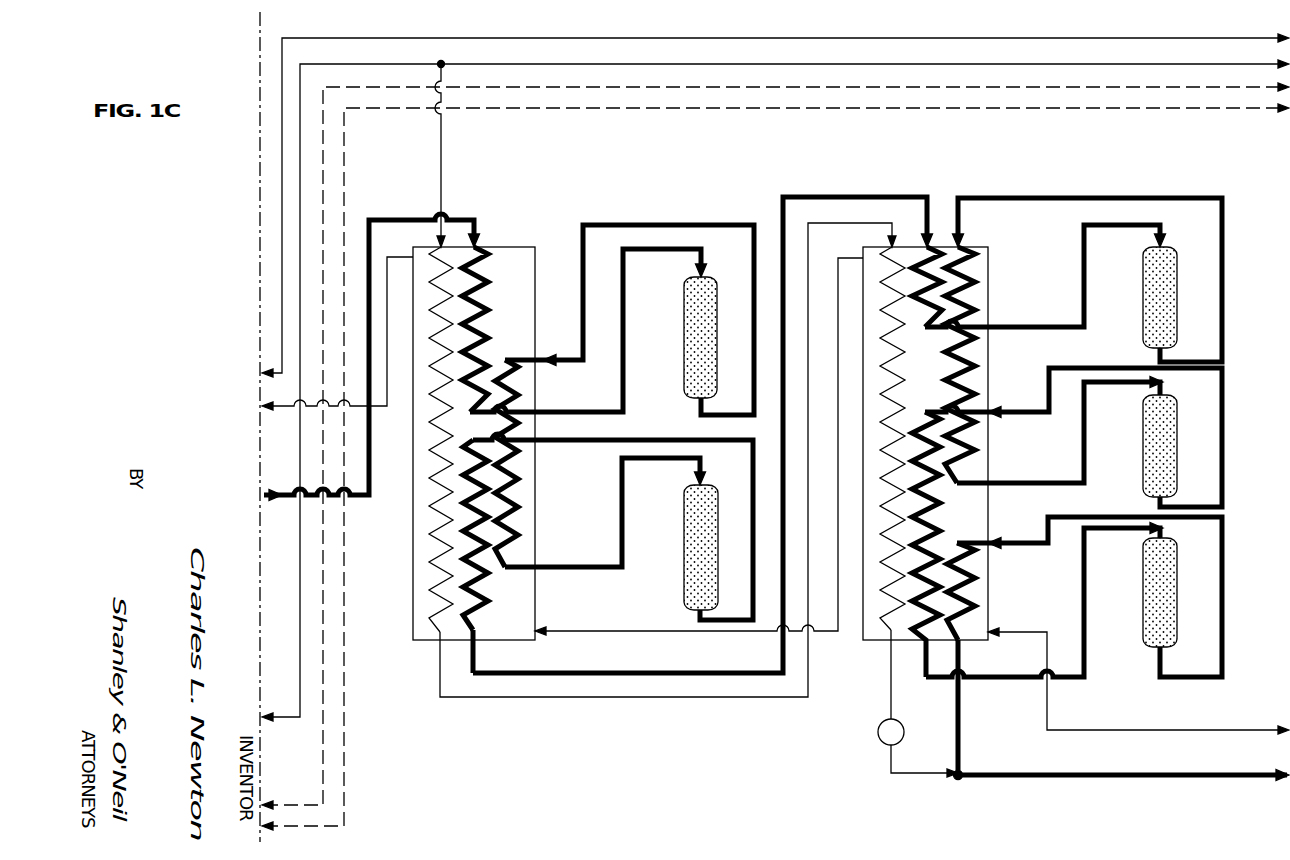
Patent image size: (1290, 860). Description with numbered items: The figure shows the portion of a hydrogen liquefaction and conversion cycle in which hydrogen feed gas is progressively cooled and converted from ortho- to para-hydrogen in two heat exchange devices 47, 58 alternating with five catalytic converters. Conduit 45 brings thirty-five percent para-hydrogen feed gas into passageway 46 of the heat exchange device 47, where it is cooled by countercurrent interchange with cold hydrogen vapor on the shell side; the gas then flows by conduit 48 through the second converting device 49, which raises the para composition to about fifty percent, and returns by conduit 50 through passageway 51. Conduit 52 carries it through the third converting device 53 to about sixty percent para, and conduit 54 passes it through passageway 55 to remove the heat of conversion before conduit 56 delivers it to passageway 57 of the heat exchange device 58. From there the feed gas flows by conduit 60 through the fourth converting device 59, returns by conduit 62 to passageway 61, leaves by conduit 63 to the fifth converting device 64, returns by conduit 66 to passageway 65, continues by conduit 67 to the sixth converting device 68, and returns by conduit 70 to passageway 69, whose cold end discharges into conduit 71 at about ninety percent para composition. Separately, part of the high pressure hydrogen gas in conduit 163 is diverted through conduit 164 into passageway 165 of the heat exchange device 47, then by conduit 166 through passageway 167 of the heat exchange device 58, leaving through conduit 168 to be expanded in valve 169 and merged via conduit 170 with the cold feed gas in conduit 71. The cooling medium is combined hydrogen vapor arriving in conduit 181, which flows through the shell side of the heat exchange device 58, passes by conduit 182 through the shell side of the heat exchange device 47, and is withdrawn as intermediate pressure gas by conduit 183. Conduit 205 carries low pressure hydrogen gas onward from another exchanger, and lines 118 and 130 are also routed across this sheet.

The conduit 45 is at (478, 220).
The passageway 46 is at (487, 265).
The heat exchange device 47 is at (540, 513).
The conduit 48 is at (623, 404).
The second converting device 49 is at (684, 358).
The conduit 50 is at (676, 224).
The passageway 51 is at (518, 468).
The conduit 52 is at (622, 546).
The third converting device 53 is at (684, 585).
The conduit 54 is at (753, 482).
The passageway 55 is at (480, 630).
The conduit 56 is at (628, 672).
The passageway 57 is at (935, 285).
The heat exchange device 58 is at (990, 378).
The fourth converting device 59 is at (1143, 272).
The conduit 60 is at (1084, 273).
The hydrogen feed gas passageway 61 is at (976, 283).
The conduit 62 is at (1088, 196).
The conduit 63 is at (1084, 440).
The fifth converting device 64 is at (1143, 444).
The hydrogen feed gas passageway 65 is at (937, 517).
The conduit 66 is at (1110, 368).
The conduit 67 is at (1086, 640).
The sixth converting device 68 is at (1143, 578).
The hydrogen feed gas passageway 69 is at (975, 598).
The conduit 70 is at (1055, 545).
The conduit 71 is at (960, 712).
The control signal line 118 is at (378, 85).
The control signal line 130 is at (391, 108).
The conduit 163 is at (390, 70).
The conduit 164 is at (441, 160).
The passageway 165 is at (432, 535).
The conduit 166 is at (672, 698).
The passageway 167 is at (888, 630).
The conduit 168 is at (891, 690).
The valve 169 is at (878, 733).
The conduit 170 is at (937, 778).
The conduit 181 is at (1030, 632).
The conduit 182 is at (612, 630).
The conduit 183 is at (402, 258).
The conduit 205 is at (388, 44).